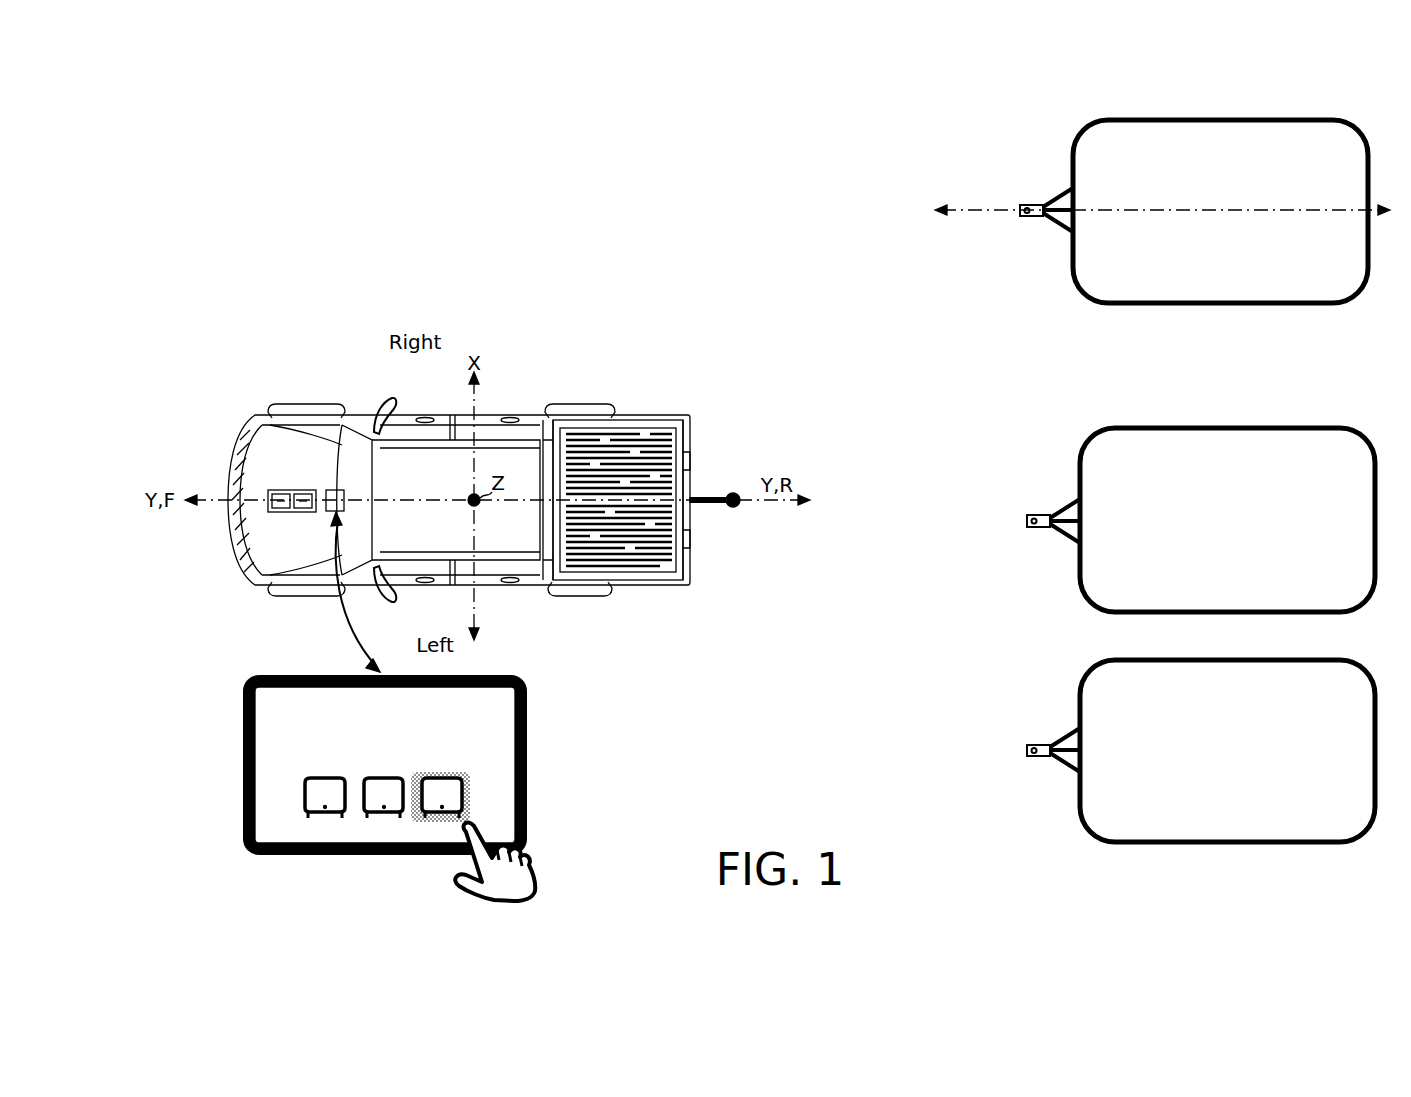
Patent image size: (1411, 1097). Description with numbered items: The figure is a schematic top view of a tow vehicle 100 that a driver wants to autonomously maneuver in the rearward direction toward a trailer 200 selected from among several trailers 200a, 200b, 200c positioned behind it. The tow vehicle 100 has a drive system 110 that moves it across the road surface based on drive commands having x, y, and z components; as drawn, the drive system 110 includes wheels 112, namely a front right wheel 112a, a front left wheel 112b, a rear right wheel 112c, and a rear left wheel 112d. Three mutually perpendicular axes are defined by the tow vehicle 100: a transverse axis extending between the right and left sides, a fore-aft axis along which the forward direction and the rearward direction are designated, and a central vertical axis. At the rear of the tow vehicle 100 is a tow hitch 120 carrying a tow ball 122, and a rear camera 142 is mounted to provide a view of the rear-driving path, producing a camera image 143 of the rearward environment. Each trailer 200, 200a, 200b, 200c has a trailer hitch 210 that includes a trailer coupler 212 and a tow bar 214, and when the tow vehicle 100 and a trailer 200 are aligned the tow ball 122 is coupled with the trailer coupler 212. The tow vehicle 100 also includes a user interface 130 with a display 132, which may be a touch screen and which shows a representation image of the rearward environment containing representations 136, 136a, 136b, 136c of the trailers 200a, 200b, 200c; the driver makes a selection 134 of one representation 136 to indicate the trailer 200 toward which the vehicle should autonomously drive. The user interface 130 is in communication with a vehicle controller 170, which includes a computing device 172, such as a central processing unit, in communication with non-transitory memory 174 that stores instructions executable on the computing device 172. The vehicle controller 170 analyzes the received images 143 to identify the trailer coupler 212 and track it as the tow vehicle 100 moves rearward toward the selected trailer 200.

The tow vehicle 100 is at (245, 398).
The drive system 110 is at (448, 498).
The wheel 112 is at (448, 498).
The front right wheel 112a is at (305, 403).
The front left wheel 112b is at (305, 597).
The rear right wheel 112c is at (594, 403).
The rear left wheel 112d is at (597, 597).
The tow hitch 120 is at (715, 503).
The tow ball 122 is at (736, 507).
The user interface 130 is at (345, 489).
The display 132 is at (500, 763).
The selection 134 is at (465, 772).
The representation 136 is at (394, 766).
The representation of trailer 136a is at (441, 777).
The representation of trailer 136b is at (383, 777).
The representation of trailer 136c is at (325, 777).
The rear camera 142 is at (691, 503).
The camera image 143 is at (275, 709).
The vehicle controller 170 is at (290, 489).
The computing device 172 is at (280, 509).
The non-transitory memory 174 is at (302, 509).
The trailer 200 is at (1156, 481).
The trailer 200a is at (1156, 211).
The trailer 200b is at (1227, 520).
The trailer 200c is at (1227, 751).
The trailer hitch 210 is at (1040, 205).
The trailer coupler 212 is at (1022, 207).
The tow bar 214 is at (1050, 514).